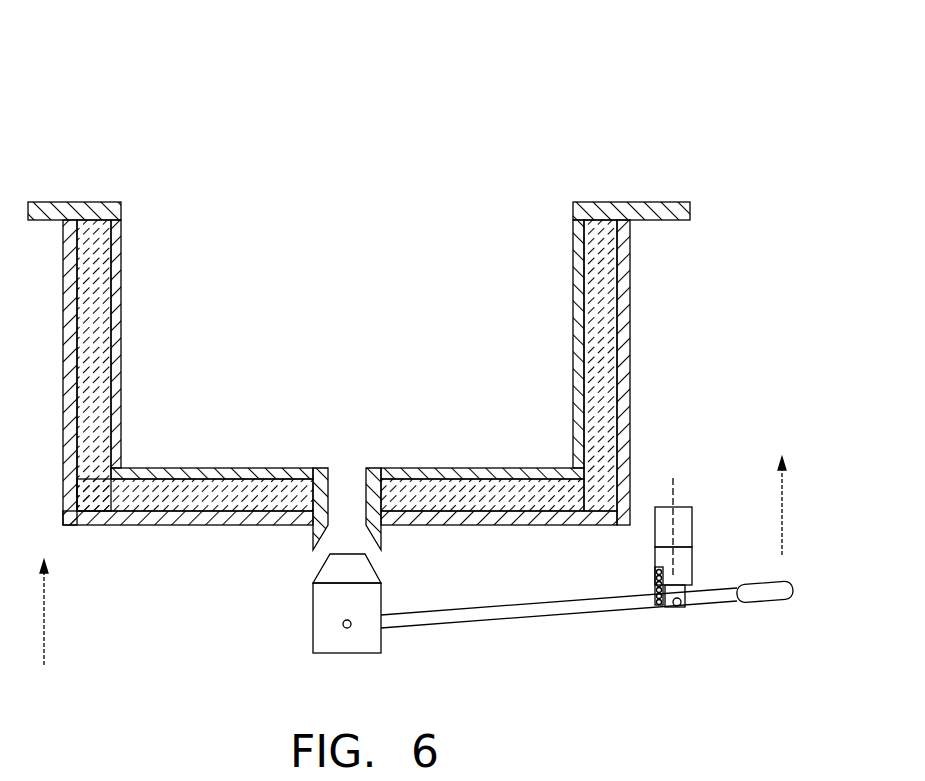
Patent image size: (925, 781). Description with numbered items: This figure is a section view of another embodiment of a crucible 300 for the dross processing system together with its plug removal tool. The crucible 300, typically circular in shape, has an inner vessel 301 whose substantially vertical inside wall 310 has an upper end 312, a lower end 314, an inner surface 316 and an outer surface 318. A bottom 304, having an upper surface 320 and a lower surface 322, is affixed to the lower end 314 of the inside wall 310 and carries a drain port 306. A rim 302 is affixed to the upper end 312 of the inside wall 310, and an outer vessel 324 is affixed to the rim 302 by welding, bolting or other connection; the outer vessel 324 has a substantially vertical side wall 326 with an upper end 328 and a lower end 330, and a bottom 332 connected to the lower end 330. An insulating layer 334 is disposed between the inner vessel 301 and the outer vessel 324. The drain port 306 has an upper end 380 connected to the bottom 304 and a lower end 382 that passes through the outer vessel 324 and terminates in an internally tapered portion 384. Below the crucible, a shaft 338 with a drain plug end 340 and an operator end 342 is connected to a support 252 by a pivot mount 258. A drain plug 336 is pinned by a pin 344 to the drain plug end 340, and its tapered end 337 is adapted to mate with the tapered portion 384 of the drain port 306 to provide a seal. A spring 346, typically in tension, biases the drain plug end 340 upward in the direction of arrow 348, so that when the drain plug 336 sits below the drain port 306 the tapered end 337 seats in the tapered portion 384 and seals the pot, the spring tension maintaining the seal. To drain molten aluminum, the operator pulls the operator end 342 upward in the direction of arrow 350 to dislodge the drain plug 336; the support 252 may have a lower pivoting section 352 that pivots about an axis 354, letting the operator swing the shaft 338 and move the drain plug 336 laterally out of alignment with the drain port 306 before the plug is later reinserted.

The crucible 300 is at (553, 90).
The inner vessel 301 is at (118, 308).
The rim 302 is at (647, 203).
The bottom 304 is at (182, 468).
The drain port 306 is at (370, 468).
The inside wall 310 is at (122, 238).
The upper end 312 is at (560, 233).
The lower end 314 is at (558, 429).
The inner surface 316 is at (573, 325).
The outer surface 318 is at (584, 316).
The upper surface 320 is at (447, 468).
The lower surface 322 is at (444, 482).
The outer vessel 324 is at (625, 345).
The side wall 326 is at (618, 378).
The upper end 328 is at (645, 238).
The lower end 330 is at (641, 470).
The bottom 332 is at (550, 524).
The insulating layer 334 is at (618, 393).
The drain plug 336 is at (348, 590).
The tapered end 337 is at (373, 563).
The shaft 338 is at (572, 613).
The drain plug end 340 is at (299, 668).
The operator end 342 is at (791, 622).
The pin 344 is at (349, 628).
The spring 346 is at (656, 590).
The arrow 348 is at (44, 617).
The arrow 350 is at (782, 530).
The pivoting section 352 is at (683, 567).
The axis 354 is at (673, 490).
The support 252 is at (683, 528).
The pivot mount 258 is at (680, 607).
The upper end 380 is at (324, 448).
The lower end 382 is at (304, 547).
The tapered portion 384 is at (323, 556).